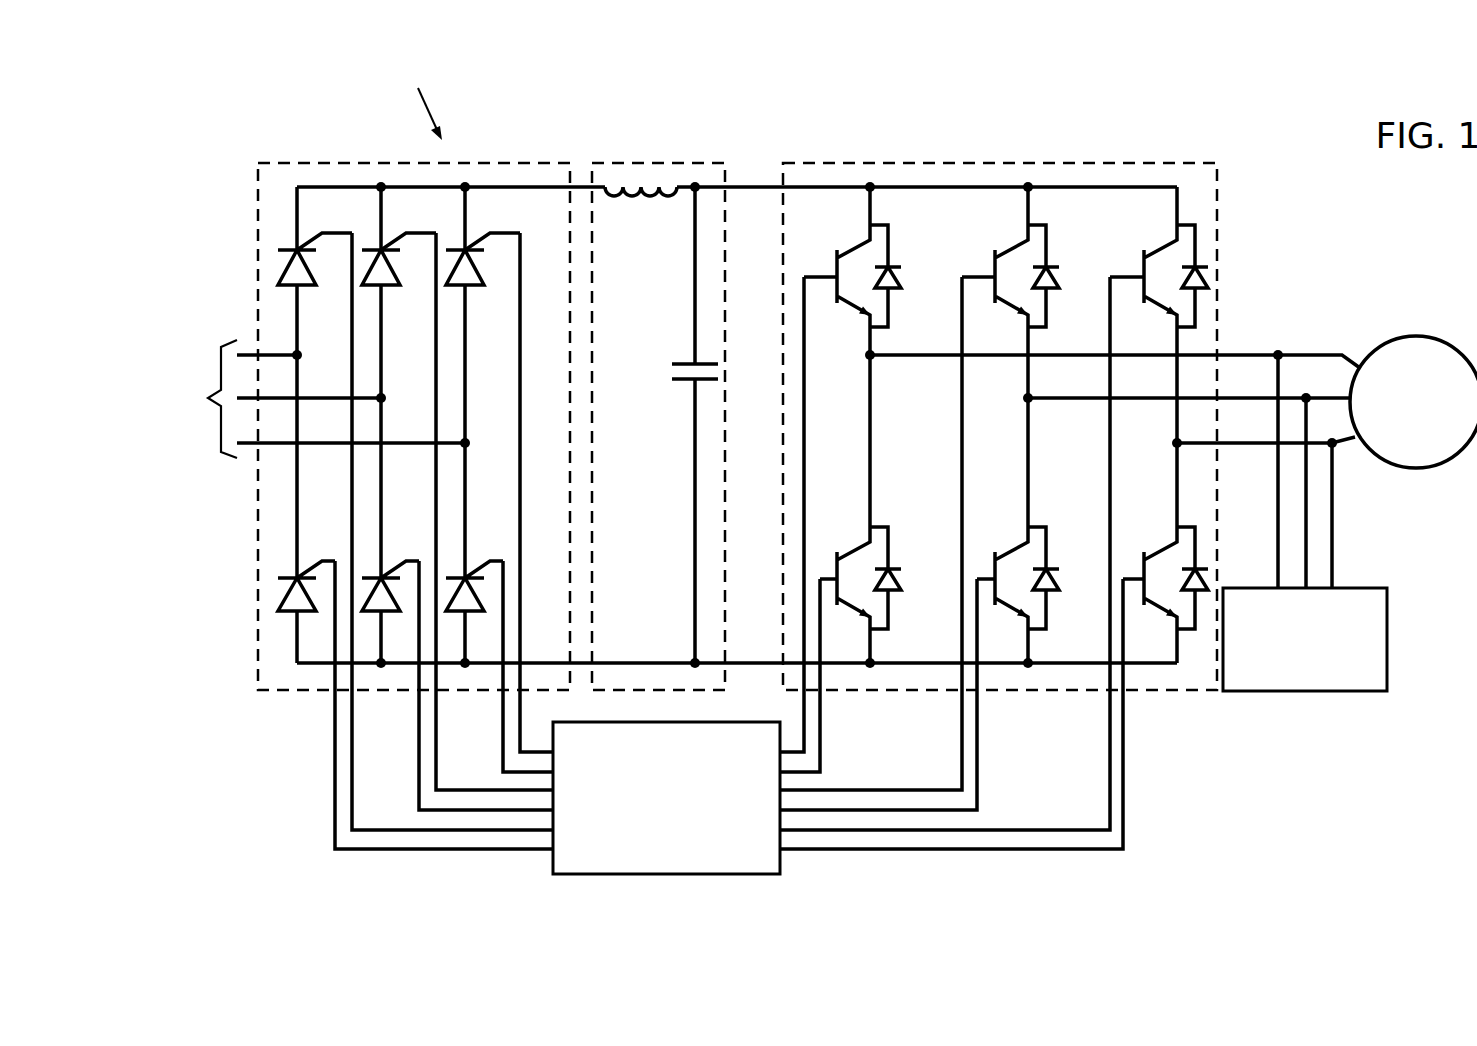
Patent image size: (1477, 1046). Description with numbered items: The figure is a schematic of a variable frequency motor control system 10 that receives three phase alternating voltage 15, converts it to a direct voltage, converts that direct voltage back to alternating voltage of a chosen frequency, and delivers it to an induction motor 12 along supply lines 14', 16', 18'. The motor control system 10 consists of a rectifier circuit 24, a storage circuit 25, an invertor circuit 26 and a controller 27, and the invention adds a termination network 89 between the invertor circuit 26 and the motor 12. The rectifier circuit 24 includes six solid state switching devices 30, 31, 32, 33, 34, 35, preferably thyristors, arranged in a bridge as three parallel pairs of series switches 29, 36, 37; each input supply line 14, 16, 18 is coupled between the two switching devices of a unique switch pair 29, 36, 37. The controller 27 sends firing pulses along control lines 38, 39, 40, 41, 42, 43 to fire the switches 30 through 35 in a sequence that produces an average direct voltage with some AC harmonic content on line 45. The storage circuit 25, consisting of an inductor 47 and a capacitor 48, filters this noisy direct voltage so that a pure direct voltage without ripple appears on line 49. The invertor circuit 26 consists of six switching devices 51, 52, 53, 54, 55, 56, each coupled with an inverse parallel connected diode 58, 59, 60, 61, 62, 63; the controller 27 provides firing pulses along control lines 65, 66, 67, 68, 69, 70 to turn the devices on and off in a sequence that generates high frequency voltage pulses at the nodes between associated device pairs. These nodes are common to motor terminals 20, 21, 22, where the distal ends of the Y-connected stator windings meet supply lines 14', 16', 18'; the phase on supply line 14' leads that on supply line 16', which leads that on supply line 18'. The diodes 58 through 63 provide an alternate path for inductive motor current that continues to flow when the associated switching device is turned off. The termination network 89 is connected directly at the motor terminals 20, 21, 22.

The variable frequency motor control system 10 is at (418, 99).
The induction motor 12 is at (1400, 335).
The supply line 14 is at (247, 329).
The three phase alternating voltage 15 is at (180, 470).
The supply line 16 is at (294, 330).
The supply line 18 is at (335, 483).
The supply line 14' is at (1112, 322).
The supply line 16' is at (1186, 351).
The supply line 18' is at (1263, 487).
The motor terminal 20 is at (1278, 355).
The motor terminal 21 is at (1307, 397).
The motor terminal 22 is at (1332, 450).
The rectifier circuit 24 is at (288, 165).
The storage circuit 25 is at (700, 168).
The invertor circuit 26 is at (1080, 163).
The controller 27 is at (553, 876).
The switch pair 29 is at (280, 218).
The solid state switching device 30 is at (316, 285).
The solid state switching device 31 is at (400, 285).
The solid state switching device 32 is at (484, 285).
The solid state switching device 33 is at (299, 575).
The solid state switching device 34 is at (383, 575).
The solid state switching device 35 is at (467, 575).
The switch pair 36 is at (412, 233).
The switch pair 37 is at (496, 233).
The control line 38 is at (333, 713).
The control line 39 is at (350, 738).
The control line 40 is at (418, 713).
The control line 41 is at (435, 752).
The control line 42 is at (502, 752).
The control line 43 is at (522, 715).
The direct voltage line 45 is at (580, 187).
The inductor 47 is at (657, 200).
The capacitor 48 is at (672, 379).
The filtered direct voltage line 49 is at (752, 187).
The solid state switching device 51 is at (853, 245).
The solid state switching device 52 is at (1010, 245).
The solid state switching device 53 is at (1158, 245).
The solid state switching device 54 is at (856, 545).
The solid state switching device 55 is at (1008, 545).
The solid state switching device 56 is at (1160, 548).
The inverse parallel connected diode 58 is at (902, 278).
The inverse parallel connected diode 59 is at (1060, 278).
The inverse parallel connected diode 60 is at (1198, 272).
The inverse parallel connected diode 61 is at (898, 580).
The inverse parallel connected diode 62 is at (1056, 580).
The inverse parallel connected diode 63 is at (1197, 592).
The control line 65 is at (804, 710).
The control line 66 is at (820, 707).
The control line 67 is at (962, 724).
The control line 68 is at (977, 742).
The control line 69 is at (1108, 735).
The control line 70 is at (1123, 795).
The termination network 89 is at (1270, 693).